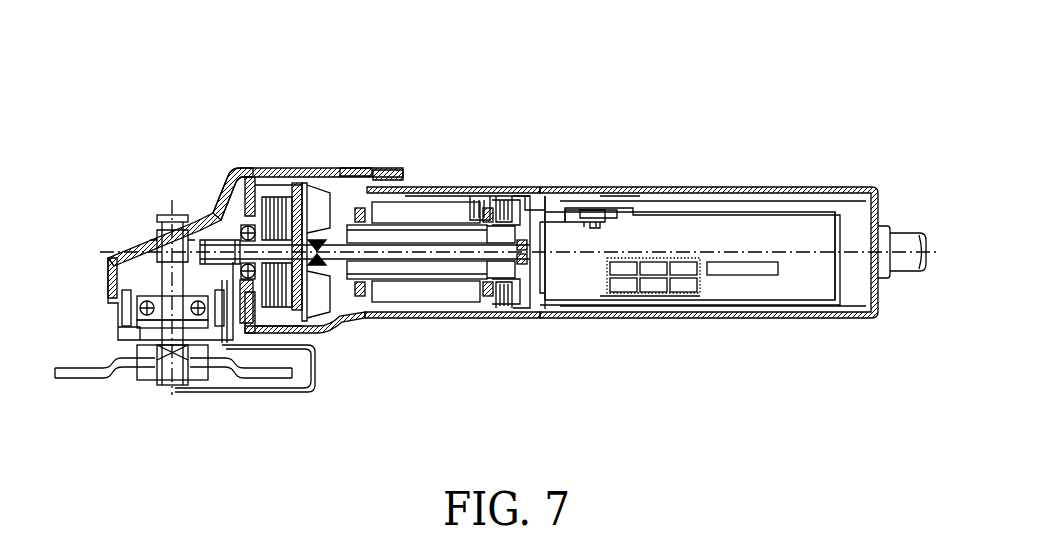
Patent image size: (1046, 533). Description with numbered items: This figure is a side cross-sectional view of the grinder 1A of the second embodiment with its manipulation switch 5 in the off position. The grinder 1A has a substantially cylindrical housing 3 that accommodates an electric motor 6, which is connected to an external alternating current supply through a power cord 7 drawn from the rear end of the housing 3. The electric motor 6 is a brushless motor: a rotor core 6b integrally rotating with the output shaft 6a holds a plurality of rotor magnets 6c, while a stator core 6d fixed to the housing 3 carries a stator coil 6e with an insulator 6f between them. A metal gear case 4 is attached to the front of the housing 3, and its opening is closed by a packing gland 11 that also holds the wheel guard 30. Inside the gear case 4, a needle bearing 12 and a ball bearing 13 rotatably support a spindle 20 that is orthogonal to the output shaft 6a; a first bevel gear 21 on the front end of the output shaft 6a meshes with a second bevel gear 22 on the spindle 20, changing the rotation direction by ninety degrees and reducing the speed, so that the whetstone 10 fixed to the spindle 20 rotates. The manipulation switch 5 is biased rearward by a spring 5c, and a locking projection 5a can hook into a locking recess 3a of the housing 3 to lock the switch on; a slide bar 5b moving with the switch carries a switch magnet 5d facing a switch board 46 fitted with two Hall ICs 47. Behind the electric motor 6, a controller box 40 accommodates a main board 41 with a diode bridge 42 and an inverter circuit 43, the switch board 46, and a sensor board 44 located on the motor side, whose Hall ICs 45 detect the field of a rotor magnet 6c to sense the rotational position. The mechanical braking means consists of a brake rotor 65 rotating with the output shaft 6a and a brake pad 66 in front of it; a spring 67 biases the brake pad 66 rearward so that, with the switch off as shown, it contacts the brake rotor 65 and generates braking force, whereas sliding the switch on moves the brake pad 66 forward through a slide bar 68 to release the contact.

The grinder 1A is at (754, 185).
The housing 3 is at (695, 190).
The locking recess 3a is at (334, 170).
The gear case 4 is at (128, 232).
The manipulation switch 5 is at (390, 186).
The locking projection 5a is at (352, 170).
The slide bar 5b is at (430, 189).
The spring 5c is at (538, 194).
The switch magnet 5d is at (610, 193).
The electric motor 6 is at (449, 312).
The output shaft 6a is at (373, 313).
The rotor core 6b is at (393, 315).
The rotor magnets 6c is at (422, 315).
The stator core 6d is at (465, 313).
The stator coil 6e is at (497, 313).
The insulator 6f is at (490, 313).
The power cord 7 is at (899, 240).
The whetstone 10 is at (70, 376).
The packing gland 11 is at (107, 303).
The needle bearing 12 is at (155, 248).
The ball bearing 13 is at (122, 328).
The spindle 20 is at (180, 238).
The first bevel gear 21 is at (214, 225).
The second bevel gear 22 is at (117, 258).
The wheel guard 30 is at (235, 393).
The controller box 40 is at (667, 207).
The main board 41 is at (688, 307).
The diode bridge 42 is at (743, 307).
The inverter circuit 43 is at (655, 313).
The sensor board 44 is at (503, 195).
The Hall ICs 45 is at (478, 195).
The switch board 46 is at (620, 203).
The Hall ICs 47 is at (603, 187).
The brake rotor 65 is at (297, 185).
The brake pad 66 is at (296, 195).
The spring 67 is at (272, 178).
The slide bar 68 is at (340, 178).